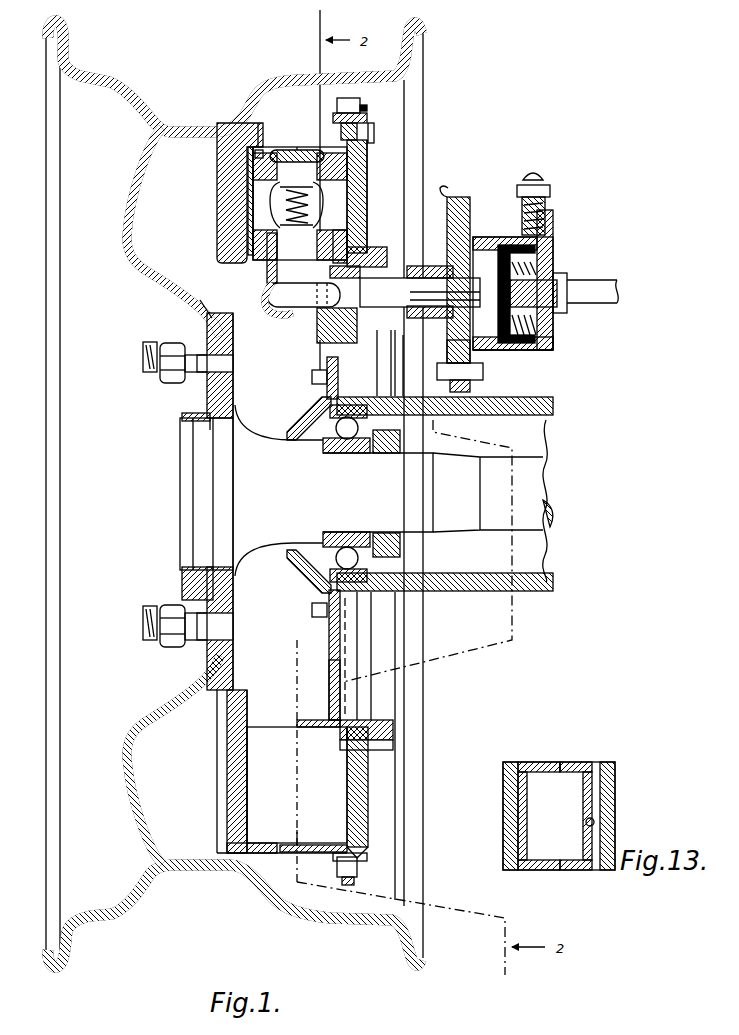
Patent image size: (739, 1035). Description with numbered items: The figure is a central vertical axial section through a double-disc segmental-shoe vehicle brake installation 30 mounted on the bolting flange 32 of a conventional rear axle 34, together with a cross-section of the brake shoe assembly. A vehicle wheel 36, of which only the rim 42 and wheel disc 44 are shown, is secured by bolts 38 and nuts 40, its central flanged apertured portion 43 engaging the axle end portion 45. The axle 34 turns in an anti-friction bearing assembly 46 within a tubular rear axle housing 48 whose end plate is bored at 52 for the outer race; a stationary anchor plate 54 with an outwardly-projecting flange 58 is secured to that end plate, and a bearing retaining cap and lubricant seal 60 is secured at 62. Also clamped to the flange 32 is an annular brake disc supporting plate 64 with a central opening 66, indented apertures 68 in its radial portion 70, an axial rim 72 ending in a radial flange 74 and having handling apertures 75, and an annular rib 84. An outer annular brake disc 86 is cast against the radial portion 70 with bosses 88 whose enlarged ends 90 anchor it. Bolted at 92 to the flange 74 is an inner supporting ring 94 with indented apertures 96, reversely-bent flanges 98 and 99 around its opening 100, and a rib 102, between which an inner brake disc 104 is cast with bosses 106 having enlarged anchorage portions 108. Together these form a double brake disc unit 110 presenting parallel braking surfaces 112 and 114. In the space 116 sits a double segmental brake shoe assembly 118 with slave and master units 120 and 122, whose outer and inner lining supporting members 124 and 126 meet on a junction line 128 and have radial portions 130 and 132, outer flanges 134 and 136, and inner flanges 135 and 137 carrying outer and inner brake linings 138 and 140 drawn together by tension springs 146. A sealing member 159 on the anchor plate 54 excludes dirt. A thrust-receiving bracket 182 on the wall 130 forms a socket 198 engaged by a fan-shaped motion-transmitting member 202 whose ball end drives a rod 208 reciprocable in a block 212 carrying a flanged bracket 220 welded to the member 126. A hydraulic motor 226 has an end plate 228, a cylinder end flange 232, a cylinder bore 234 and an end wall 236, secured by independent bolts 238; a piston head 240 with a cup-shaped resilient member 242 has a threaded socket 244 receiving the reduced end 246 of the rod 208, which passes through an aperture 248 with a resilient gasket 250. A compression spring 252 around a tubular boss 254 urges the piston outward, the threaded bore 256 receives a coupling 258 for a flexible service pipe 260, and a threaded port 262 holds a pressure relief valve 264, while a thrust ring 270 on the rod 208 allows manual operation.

In FIG. 1, the double-disc segmental-shoe vehicle brake installation 30 is at (372, 160).
In FIG. 1, the bolting flange 32 is at (222, 468).
In FIG. 1, the rear axle 34 is at (525, 495).
In FIG. 1, the vehicle wheel 36 is at (148, 158).
In FIG. 1, the bolts or studs 38 is at (143, 361).
In FIG. 1, the nuts 40 is at (165, 380).
In FIG. 1, the rim 42 is at (118, 73).
In FIG. 1, the central flanged apertured portion 43 is at (182, 417).
In FIG. 1, the wheel disc 44 is at (128, 212).
In FIG. 1, the axle end portion 45 is at (207, 503).
In FIG. 1, the anti-friction bearing assembly 46 is at (356, 428).
In FIG. 1, the tubular rear axle housing 48 is at (530, 590).
In FIG. 1, the internal bore 52 is at (359, 600).
In FIG. 1, the brake-shoe-supporting or anchor plate 54 is at (329, 680).
In FIG. 1, the outwardly-projecting flange 58 is at (300, 720).
In FIG. 1, the bearing retaining cap and lubricant seal 60 is at (305, 575).
In FIG. 1, the securing means 62 is at (312, 610).
In FIG. 1, the brake disc supporting plate 64 is at (208, 398).
In FIG. 1, the central opening 66 is at (207, 422).
In FIG. 1, the brake disc securing apertures 68 is at (228, 173).
In FIG. 1, the radial portion 70 is at (230, 218).
In FIG. 1, the axially-extending portion or rim 72 is at (258, 125).
In FIG. 1, the radial flange 74 is at (350, 95).
In FIG. 1, the apertures 75 is at (315, 845).
In FIG. 1, the annular indentation rib 84 is at (200, 300).
In FIG. 1, the outer annular brake disc 86 is at (240, 222).
In FIG. 1, the anchor portions or bosses 88 is at (228, 185).
In FIG. 1, the enlarged ends 90 is at (233, 163).
In FIG. 1, the bolts 92 is at (367, 116).
In FIG. 1, the inner annular brake disc supporting ring 94 is at (372, 175).
In FIG. 1, the indented apertures 96 is at (375, 195).
In FIG. 1, the reversely-bent flange 98 is at (415, 252).
In FIG. 1, the inner flange 99 is at (347, 278).
In FIG. 1, the inner opening 100 is at (420, 262).
In FIG. 1, the rib 102 is at (370, 140).
In FIG. 1, the inner annular brake disc 104 is at (375, 148).
In FIG. 1, the bosses 106 is at (380, 196).
In FIG. 1, the enlarged anchorage portions 108 is at (368, 182).
In FIG. 1, the double annular brake disc unit 110 is at (232, 138).
In FIG. 1, the outer braking surface 112 is at (247, 760).
In FIG. 1, the inner braking surface 114 is at (337, 733).
In FIG. 1, the space 116 is at (277, 838).
In FIG. 1, the double segmental brake shoe assembly 118 is at (294, 147).
In FIG. 1, the outer or slave brake shoe unit 120 is at (253, 145).
In FIG. 1, the inner or master brake shoe unit 122 is at (372, 128).
In FIG. 1, the outer brake lining supporting member 124 is at (283, 152).
In FIG. 13, the outer brake lining supporting member 124 is at (522, 764).
In FIG. 1, the inner brake lining supporting member 126 is at (311, 150).
In FIG. 13, the inner brake lining supporting member 126 is at (607, 762).
In FIG. 13, the common junction line 128 is at (563, 762).
In FIG. 1, the radial portion of outer supporting member 130 is at (262, 262).
In FIG. 13, the radial portion of outer supporting member 130 is at (522, 790).
In FIG. 1, the radial portion of inner supporting member 132 is at (337, 265).
In FIG. 13, the radial portion of inner supporting member 132 is at (594, 822).
In FIG. 13, the outer flange of outer supporting member 134 is at (538, 762).
In FIG. 13, the inner flange of outer supporting member 135 is at (541, 870).
In FIG. 13, the outer flange of inner supporting member 136 is at (588, 762).
In FIG. 13, the inner flange of inner supporting member 137 is at (570, 872).
In FIG. 1, the outer brake lining 138 is at (233, 230).
In FIG. 13, the outer brake lining 138 is at (510, 835).
In FIG. 1, the inner brake lining 140 is at (363, 244).
In FIG. 13, the inner brake lining 140 is at (605, 799).
In FIG. 1, the tension springs 146 is at (300, 214).
In FIG. 1, the sealing member 159 is at (357, 713).
In FIG. 1, the thrust-receiving arm or forward bracket 182 is at (265, 275).
In FIG. 1, the trough-shaped socket 198 is at (267, 310).
In FIG. 1, the fan-shaped motion-transmitting member 202 is at (317, 330).
In FIG. 1, the motion-transmitting rod 208 is at (420, 291).
In FIG. 1, the elongated block 212 is at (377, 372).
In FIG. 1, the flanged bracket 220 is at (312, 377).
In FIG. 1, the hydraulic brake-operating motor 226 is at (564, 280).
In FIG. 1, the end plate 228 is at (475, 200).
In FIG. 1, the cylinder end flange 232 is at (478, 195).
In FIG. 1, the cylinder bore 234 is at (500, 352).
In FIG. 1, the end wall 236 is at (555, 345).
In FIG. 1, the independent bolts 238 is at (475, 385).
In FIG. 1, the piston head 240 is at (548, 352).
In FIG. 1, the cup-shaped resilient member 242 is at (512, 250).
In FIG. 1, the threaded socket 244 is at (478, 298).
In FIG. 1, the reduced diameter threaded end 246 is at (478, 290).
In FIG. 1, the aperture 248 is at (445, 351).
In FIG. 1, the resilient gasket 250 is at (428, 266).
In FIG. 1, the helical compression spring 252 is at (537, 262).
In FIG. 1, the tubular boss 254 is at (540, 275).
In FIG. 1, the bore 256 is at (550, 322).
In FIG. 1, the coupling 258 is at (567, 280).
In FIG. 1, the flexible hydraulic pressure fluid service pipe 260 is at (618, 296).
In FIG. 1, the threaded port 262 is at (522, 217).
In FIG. 1, the pressure relief valve 264 is at (545, 182).
In FIG. 1, the thrust washer or ring 270 is at (420, 318).